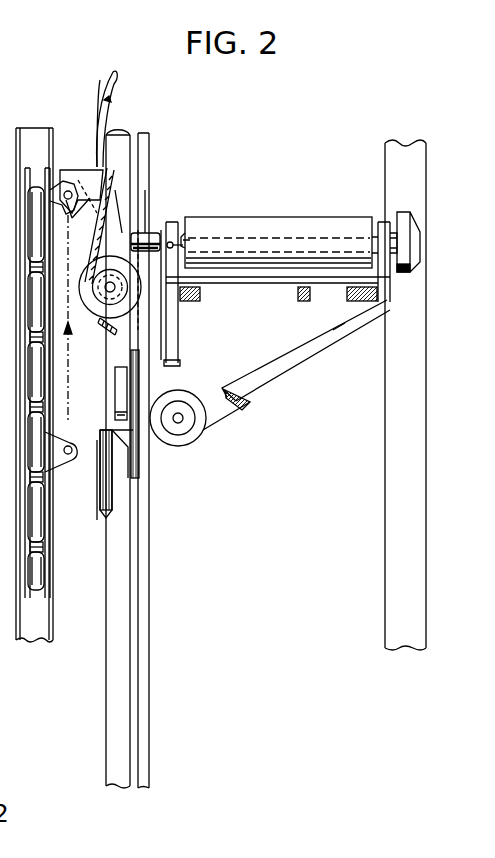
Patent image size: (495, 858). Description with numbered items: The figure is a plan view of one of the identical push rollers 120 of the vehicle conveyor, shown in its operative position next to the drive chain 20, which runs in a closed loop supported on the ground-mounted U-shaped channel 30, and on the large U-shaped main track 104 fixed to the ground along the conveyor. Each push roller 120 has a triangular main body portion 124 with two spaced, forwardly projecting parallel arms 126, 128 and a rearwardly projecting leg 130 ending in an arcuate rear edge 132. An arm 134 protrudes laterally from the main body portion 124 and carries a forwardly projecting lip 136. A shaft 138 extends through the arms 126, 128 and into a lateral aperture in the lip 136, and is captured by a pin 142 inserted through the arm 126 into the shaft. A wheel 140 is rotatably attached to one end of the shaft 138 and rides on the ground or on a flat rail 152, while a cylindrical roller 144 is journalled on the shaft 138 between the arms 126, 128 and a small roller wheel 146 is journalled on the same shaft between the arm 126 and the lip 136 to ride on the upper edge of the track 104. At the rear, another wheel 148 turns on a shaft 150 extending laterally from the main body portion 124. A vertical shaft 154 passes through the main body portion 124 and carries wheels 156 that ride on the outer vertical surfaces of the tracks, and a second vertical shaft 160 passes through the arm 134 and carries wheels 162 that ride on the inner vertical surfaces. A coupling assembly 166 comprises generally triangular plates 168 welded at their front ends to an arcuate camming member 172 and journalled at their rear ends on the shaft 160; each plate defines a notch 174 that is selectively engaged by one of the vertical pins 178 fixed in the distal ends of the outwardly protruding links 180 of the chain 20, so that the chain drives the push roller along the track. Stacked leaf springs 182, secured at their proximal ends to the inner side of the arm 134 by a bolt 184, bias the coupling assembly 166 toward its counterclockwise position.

The drive chain 20 is at (47, 547).
The channel 30 is at (58, 628).
The main track 104 is at (140, 612).
The push roller 120 is at (345, 323).
The main body portion 124 is at (285, 338).
The arm 126 is at (172, 220).
The arm 128 is at (383, 222).
The leg 130 is at (113, 488).
The arcuate rear edge 132 is at (112, 490).
The arm 134 is at (175, 340).
The lip 136 is at (136, 177).
The shaft 138 is at (268, 237).
The wheel 140 is at (410, 213).
The pin 142 is at (192, 238).
The cylindrical roller 144 is at (320, 217).
The small roller wheel 146 is at (150, 222).
The wheel 148 is at (118, 437).
The shaft 150 is at (133, 390).
The flat rail 152 is at (392, 560).
The vertical shaft 154 is at (182, 424).
The wheel 156 is at (203, 432).
The vertical shaft 160 is at (112, 287).
The wheel 162 is at (128, 298).
The coupling assembly 166 is at (110, 95).
The plate 168 is at (70, 170).
The arcuate camming member 172 is at (100, 80).
The notch 174 is at (65, 197).
The vertical pin 178 is at (77, 457).
The link 180 is at (55, 465).
The leaf spring 182 is at (130, 135).
The bolt 184 is at (103, 332).